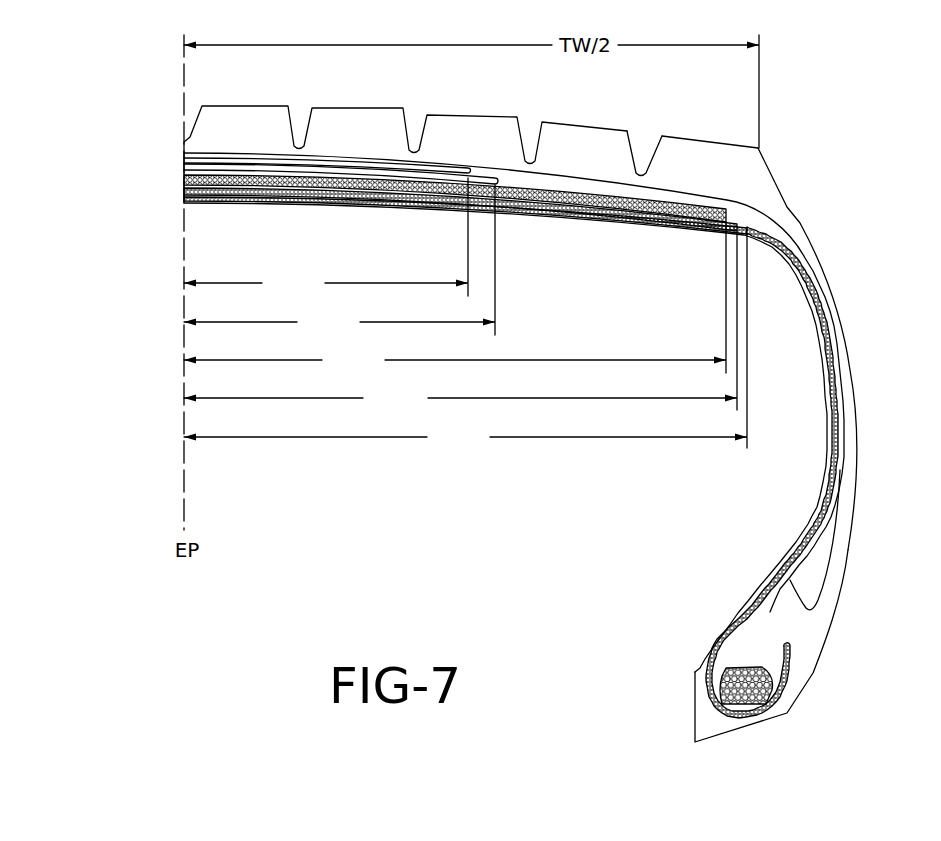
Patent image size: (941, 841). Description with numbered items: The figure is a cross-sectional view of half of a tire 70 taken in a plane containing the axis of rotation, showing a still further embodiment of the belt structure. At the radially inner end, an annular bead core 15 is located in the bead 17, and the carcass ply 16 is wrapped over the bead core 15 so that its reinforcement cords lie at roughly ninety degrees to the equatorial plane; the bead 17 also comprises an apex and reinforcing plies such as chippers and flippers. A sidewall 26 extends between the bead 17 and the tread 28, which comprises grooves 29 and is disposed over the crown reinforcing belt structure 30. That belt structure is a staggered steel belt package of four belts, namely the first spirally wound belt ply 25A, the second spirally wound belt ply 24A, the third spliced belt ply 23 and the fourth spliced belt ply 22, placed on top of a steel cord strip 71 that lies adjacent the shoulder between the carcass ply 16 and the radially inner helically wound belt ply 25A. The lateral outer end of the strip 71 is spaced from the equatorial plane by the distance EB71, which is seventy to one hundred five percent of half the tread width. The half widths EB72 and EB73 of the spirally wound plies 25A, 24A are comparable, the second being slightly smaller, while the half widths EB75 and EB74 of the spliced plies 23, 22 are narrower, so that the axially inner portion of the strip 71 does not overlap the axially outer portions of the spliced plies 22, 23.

The tire 70 is at (874, 124).
The bead core 15 is at (752, 695).
The carcass ply 16 is at (824, 507).
The bead 17 is at (706, 638).
The fourth spliced belt ply 22 is at (260, 165).
The third spliced belt ply 23 is at (357, 177).
The second spirally wound belt ply 24A is at (300, 182).
The first spirally wound belt ply 25A is at (422, 192).
The sidewall 26 is at (855, 446).
The tread 28 is at (450, 131).
The groove 29 is at (645, 153).
The belt structure 30 is at (506, 215).
The steel cord strip 71 is at (677, 218).
The lateral outer end distance of shoulder strip EB71 is at (465, 341).
The half belt width of first belt ply EB72 is at (460, 321).
The half belt width of second belt ply EB73 is at (455, 297).
The half belt width of fourth belt ply EB74 is at (326, 237).
The half belt width of third belt ply EB75 is at (339, 260).